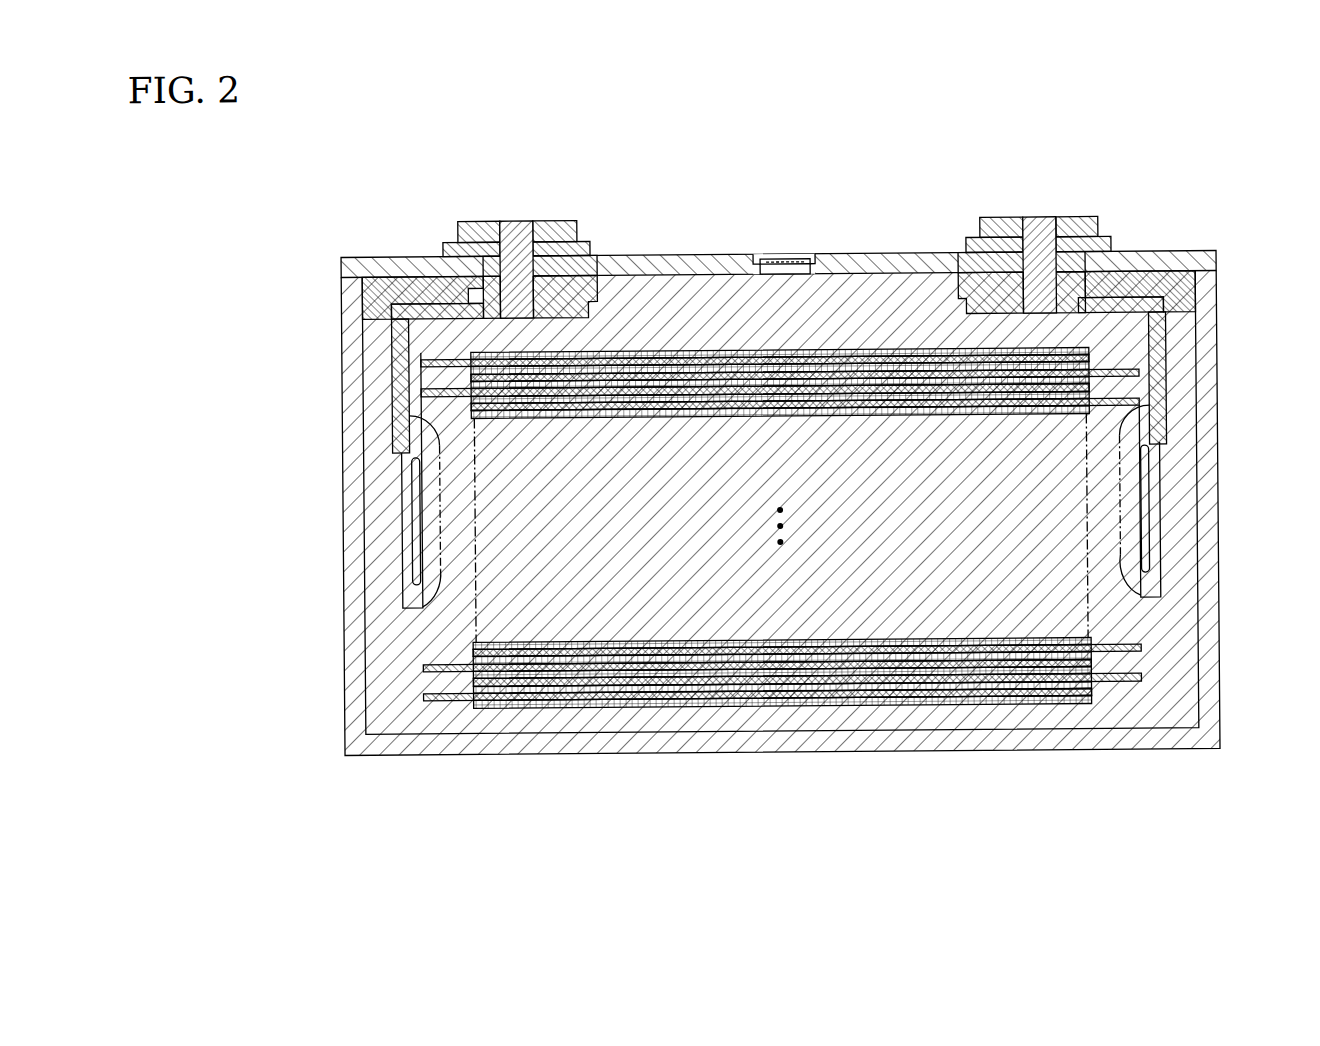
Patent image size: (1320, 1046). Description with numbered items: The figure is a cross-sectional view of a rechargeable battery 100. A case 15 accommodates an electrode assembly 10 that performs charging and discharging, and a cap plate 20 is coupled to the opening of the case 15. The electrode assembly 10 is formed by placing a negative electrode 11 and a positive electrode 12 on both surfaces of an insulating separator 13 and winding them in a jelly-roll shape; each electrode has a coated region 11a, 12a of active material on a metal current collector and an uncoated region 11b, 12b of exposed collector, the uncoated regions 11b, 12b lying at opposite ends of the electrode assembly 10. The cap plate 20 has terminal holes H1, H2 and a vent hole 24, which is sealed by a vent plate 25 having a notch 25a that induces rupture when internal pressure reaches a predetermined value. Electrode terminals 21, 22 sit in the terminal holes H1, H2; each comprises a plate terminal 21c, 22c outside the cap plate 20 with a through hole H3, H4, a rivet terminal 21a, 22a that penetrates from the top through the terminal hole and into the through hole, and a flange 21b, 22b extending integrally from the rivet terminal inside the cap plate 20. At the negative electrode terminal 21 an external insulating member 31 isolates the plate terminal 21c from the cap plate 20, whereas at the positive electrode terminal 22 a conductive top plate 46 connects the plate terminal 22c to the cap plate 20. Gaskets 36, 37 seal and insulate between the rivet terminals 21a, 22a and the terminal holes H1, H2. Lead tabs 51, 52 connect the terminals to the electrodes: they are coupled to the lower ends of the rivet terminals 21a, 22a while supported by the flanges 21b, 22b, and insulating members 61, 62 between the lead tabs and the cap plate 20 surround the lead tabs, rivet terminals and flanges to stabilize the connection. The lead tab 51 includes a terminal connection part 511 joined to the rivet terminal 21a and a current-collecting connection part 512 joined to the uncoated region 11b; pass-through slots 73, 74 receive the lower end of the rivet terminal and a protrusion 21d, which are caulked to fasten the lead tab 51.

The rechargeable battery 100 is at (768, 120).
The electrode assembly 10 is at (778, 603).
The negative electrode 11 is at (753, 607).
The coated region 11a is at (512, 700).
The uncoated region 11b is at (435, 700).
The positive electrode 12 is at (807, 609).
The coated region 12a is at (781, 590).
The uncoated region 12b is at (1093, 691).
The separator 13 is at (765, 705).
The case 15 is at (1208, 399).
The cap plate 20 is at (697, 256).
The electrode terminal 21 is at (522, 208).
The rivet terminal 21a is at (523, 318).
The flange 21b is at (600, 279).
The plate terminal 21c is at (477, 219).
The protrusion 21d is at (498, 318).
The electrode terminal 22 is at (1037, 208).
The rivet terminal 22a is at (1042, 292).
The flange 22b is at (1008, 290).
The plate terminal 22c is at (1085, 219).
The vent hole 24 is at (785, 274).
The vent plate 25 is at (812, 258).
The notch 25a is at (778, 258).
The external insulating member 31 is at (592, 233).
The gasket 36 is at (447, 232).
The gasket 37 is at (1112, 238).
The top plate 46 is at (972, 231).
The lead tab 51 is at (348, 456).
The terminal connection part 511 is at (403, 349).
The current-collecting connection part 512 is at (402, 484).
The lead tab 52 is at (1182, 333).
The insulating member 61 is at (379, 294).
The insulating member 62 is at (1178, 288).
The pass-through slot 73 is at (520, 292).
The pass-through slot 74 is at (484, 286).
The terminal hole H1 is at (554, 219).
The terminal hole H2 is at (1028, 221).
The through hole H3 is at (502, 219).
The through hole H4 is at (1056, 221).